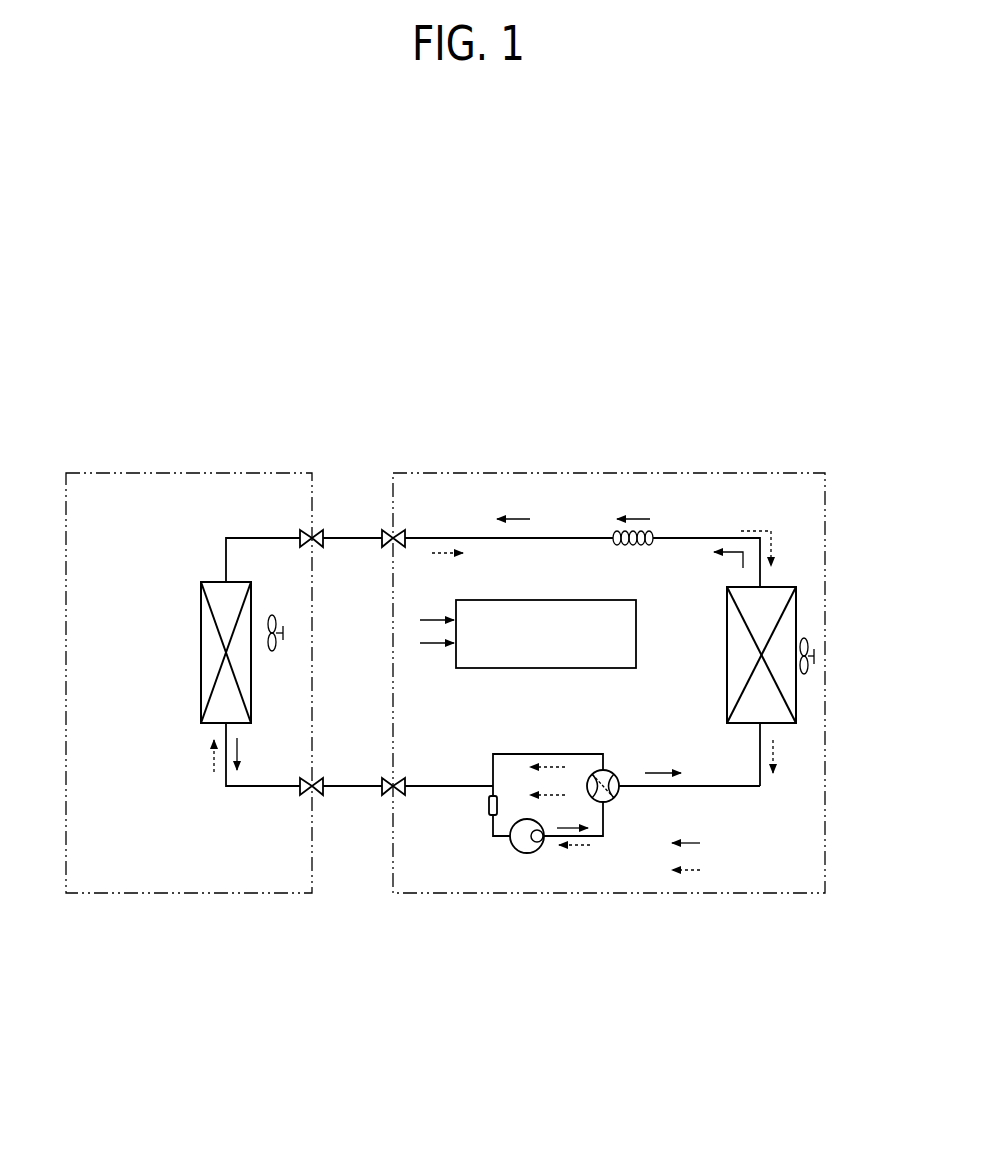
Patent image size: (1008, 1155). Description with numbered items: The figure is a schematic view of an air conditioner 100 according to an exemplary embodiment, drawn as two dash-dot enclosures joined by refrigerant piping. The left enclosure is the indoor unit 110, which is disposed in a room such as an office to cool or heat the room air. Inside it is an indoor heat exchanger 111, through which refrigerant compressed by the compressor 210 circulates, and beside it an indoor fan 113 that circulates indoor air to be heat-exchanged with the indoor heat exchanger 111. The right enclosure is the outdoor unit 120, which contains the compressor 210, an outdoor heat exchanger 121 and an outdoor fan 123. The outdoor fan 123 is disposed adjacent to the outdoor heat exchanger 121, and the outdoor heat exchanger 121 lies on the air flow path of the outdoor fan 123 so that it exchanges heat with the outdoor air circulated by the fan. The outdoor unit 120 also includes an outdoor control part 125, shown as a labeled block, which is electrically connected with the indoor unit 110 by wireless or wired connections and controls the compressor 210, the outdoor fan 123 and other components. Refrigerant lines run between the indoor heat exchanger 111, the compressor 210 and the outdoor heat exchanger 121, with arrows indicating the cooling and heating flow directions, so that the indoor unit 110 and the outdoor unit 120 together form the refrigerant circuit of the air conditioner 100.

The air conditioner 100 is at (104, 332).
The indoor unit 110 is at (249, 473).
The indoor heat exchanger 111 is at (207, 690).
The indoor fan 113 is at (272, 652).
The outdoor unit 120 is at (735, 473).
The outdoor heat exchanger 121 is at (796, 700).
The outdoor fan 123 is at (808, 640).
The outdoor control part 125 is at (556, 600).
The compressor 210 is at (527, 850).